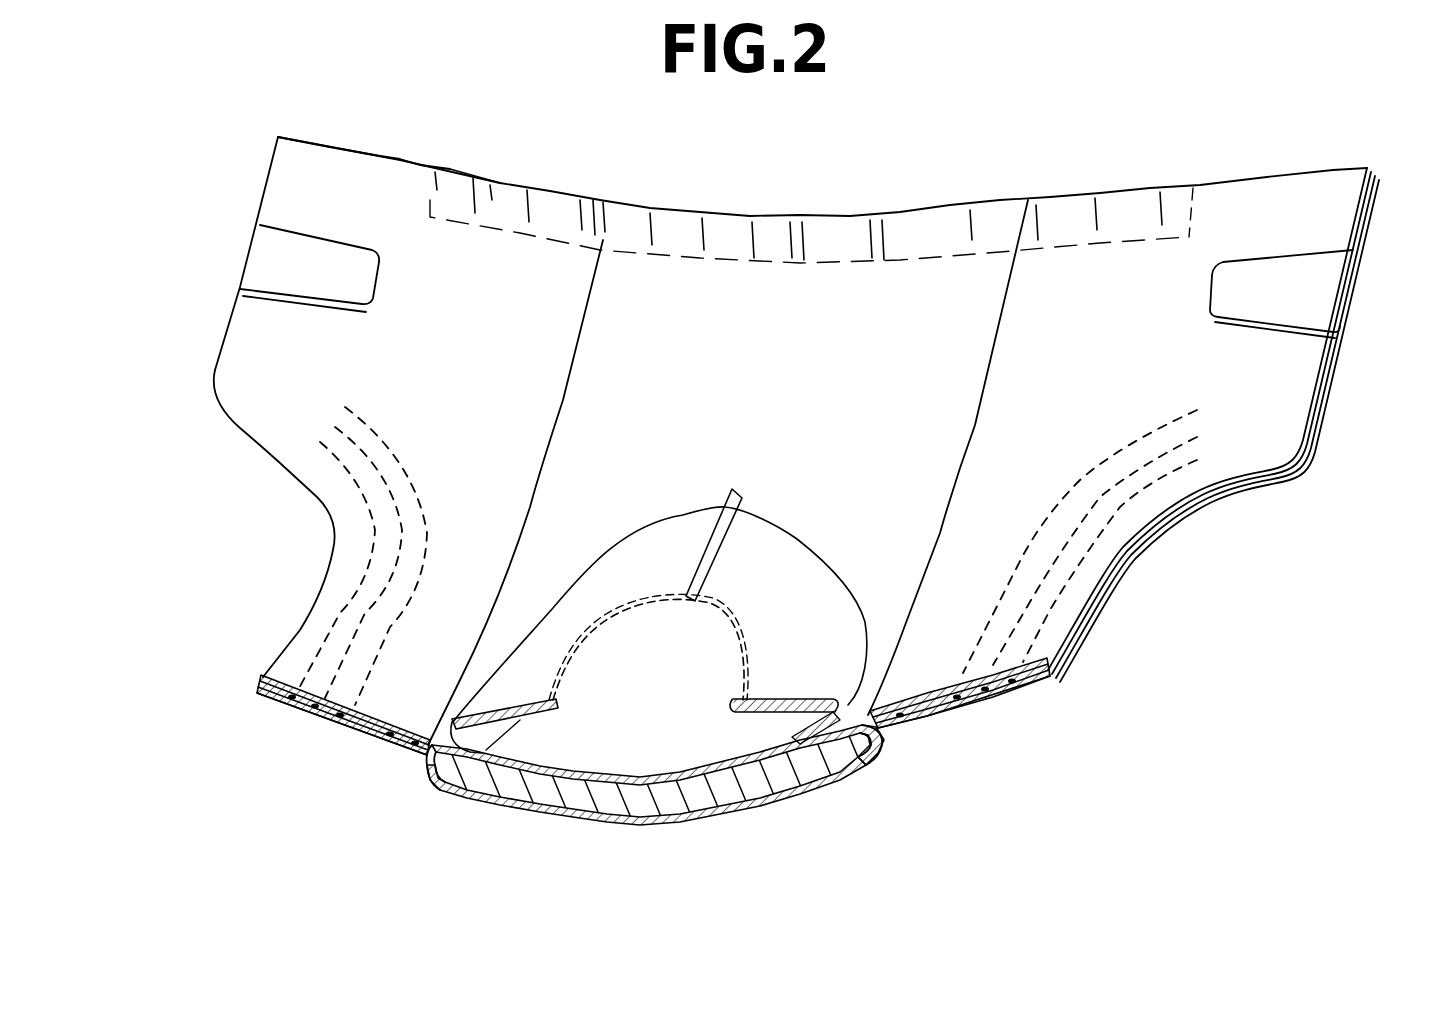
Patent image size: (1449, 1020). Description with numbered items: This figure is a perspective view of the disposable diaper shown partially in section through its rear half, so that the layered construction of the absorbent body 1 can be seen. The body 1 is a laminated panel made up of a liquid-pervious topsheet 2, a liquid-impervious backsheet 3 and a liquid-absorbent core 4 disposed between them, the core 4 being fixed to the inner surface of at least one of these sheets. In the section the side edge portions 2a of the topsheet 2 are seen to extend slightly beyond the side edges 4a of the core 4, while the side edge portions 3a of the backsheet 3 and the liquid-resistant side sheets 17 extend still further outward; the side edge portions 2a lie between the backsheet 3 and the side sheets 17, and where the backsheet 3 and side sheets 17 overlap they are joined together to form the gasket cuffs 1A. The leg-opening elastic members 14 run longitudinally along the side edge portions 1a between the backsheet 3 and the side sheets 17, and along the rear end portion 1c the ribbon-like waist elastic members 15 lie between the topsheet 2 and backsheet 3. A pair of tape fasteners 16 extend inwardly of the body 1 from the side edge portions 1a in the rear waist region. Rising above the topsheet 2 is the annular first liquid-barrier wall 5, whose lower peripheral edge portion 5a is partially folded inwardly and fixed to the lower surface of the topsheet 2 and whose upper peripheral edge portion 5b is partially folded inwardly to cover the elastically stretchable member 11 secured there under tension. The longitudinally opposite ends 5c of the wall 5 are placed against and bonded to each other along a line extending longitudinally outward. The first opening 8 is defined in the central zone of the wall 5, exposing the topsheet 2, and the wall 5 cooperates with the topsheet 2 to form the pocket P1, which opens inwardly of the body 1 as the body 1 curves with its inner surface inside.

The body 1 is at (1177, 153).
The side edge portions 1a is at (240, 340).
The rear end portion 1c is at (403, 172).
The gasket cuffs 1A is at (267, 665).
The topsheet 2 is at (621, 773).
The side edge portions of the topsheet 2a is at (397, 753).
The backsheet 3 is at (677, 817).
The side edge portions of the backsheet 3a is at (272, 697).
The core 4 is at (640, 807).
The side edges of the core 4a is at (443, 777).
The first liquid-barrier wall 5 is at (787, 700).
The lower peripheral edge portion 5a is at (557, 610).
The upper peripheral edge portion 5b is at (597, 650).
The longitudinally opposite ends 5c is at (708, 520).
The first opening 8 is at (662, 628).
The elastically stretchable member 11 is at (558, 720).
The elastic members 14 is at (372, 625).
The elastic members 15 is at (676, 213).
The tape fasteners 16 is at (265, 243).
The side sheets 17 is at (300, 682).
The pocket P1 is at (512, 733).